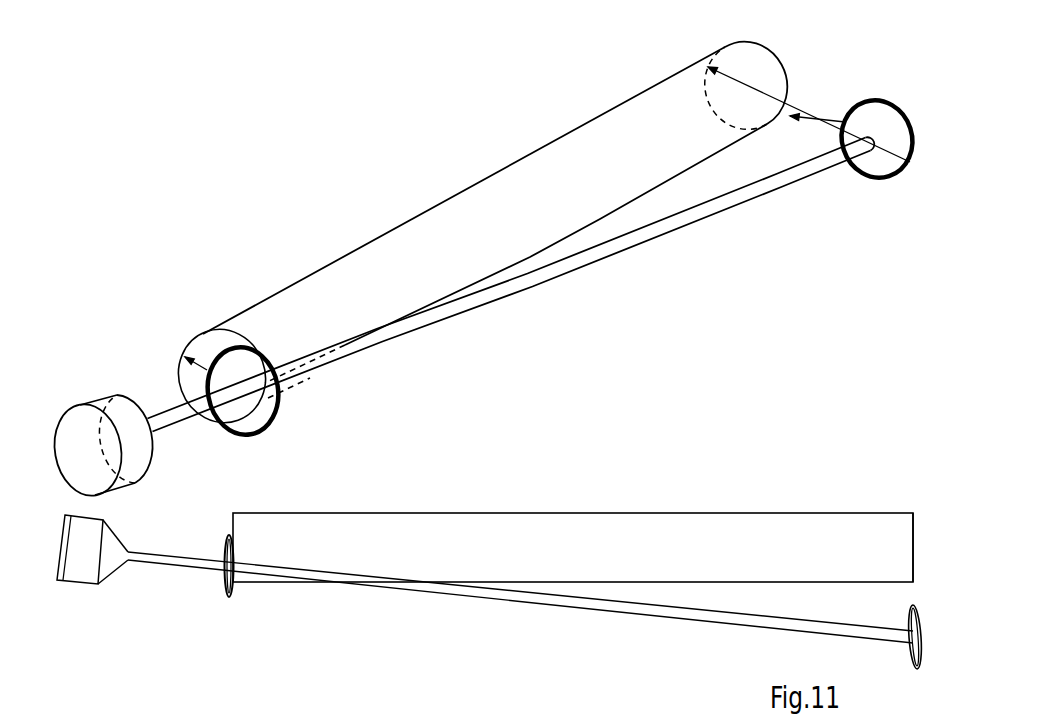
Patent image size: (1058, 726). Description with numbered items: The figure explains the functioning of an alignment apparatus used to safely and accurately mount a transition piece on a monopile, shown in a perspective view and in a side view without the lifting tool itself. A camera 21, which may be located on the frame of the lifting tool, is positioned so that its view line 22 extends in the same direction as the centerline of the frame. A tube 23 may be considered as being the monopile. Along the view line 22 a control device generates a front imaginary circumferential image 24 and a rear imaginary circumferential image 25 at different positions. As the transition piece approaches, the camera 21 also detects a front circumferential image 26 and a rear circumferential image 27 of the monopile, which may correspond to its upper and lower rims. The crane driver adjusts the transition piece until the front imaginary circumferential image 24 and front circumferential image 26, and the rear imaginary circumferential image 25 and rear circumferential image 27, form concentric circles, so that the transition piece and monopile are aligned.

The camera 21 is at (102, 413).
The view line 22 is at (594, 262).
The tube 23 is at (482, 178).
The front imaginary circumferential image 24 is at (258, 413).
The rear imaginary circumferential image 25 is at (887, 186).
The front circumferential image 26 is at (222, 338).
The rear circumferential image 27 is at (773, 65).